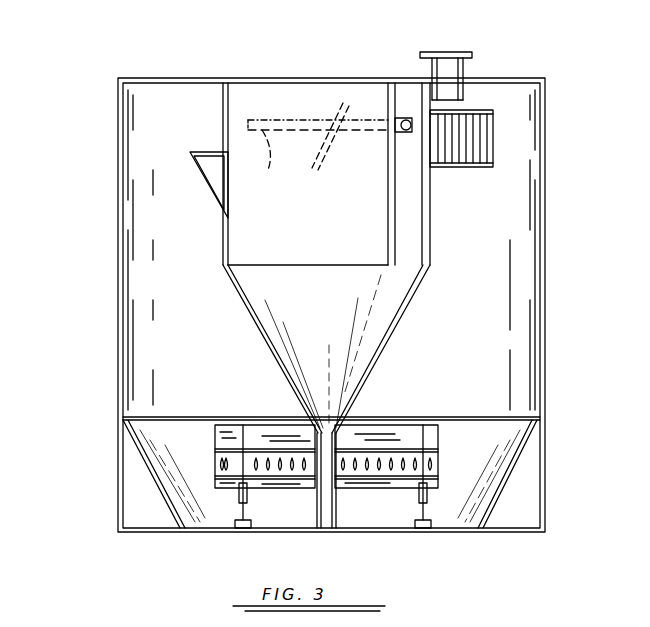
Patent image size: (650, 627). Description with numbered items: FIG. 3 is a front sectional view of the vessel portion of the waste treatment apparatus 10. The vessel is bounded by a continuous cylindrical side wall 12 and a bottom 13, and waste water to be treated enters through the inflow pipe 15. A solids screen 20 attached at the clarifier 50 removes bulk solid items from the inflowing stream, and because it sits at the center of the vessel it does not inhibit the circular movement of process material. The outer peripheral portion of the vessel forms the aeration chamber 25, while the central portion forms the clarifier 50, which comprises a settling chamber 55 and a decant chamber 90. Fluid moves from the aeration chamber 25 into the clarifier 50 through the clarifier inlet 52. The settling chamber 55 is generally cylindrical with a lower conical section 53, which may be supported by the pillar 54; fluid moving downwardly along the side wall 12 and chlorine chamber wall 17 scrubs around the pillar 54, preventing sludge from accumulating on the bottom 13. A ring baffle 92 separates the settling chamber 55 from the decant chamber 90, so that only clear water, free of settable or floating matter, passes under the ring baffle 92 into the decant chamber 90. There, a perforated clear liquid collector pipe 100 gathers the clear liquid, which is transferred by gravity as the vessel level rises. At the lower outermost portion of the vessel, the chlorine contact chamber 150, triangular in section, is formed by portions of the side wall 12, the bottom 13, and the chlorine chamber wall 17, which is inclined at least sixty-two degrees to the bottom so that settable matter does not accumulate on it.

The waste treatment apparatus 10 is at (490, 68).
The continuous cylindrical side wall 12 is at (545, 227).
The bottom 13 is at (170, 530).
The inflow pipe 15 is at (436, 50).
The chlorine chamber wall 17 is at (143, 462).
The solids screen 20 is at (495, 128).
The aeration chamber 25 is at (208, 321).
The clarifier 50 is at (430, 214).
The clarifier inlet 52 is at (216, 150).
The conical section 53 is at (280, 372).
The pillar 54 is at (337, 507).
The clarifier settling chamber 55 is at (268, 100).
The decant chamber 90 is at (408, 95).
The ring baffle 92 is at (388, 232).
The clear liquid collector pipe 100 is at (278, 152).
The chlorine contact chamber 150 is at (143, 508).